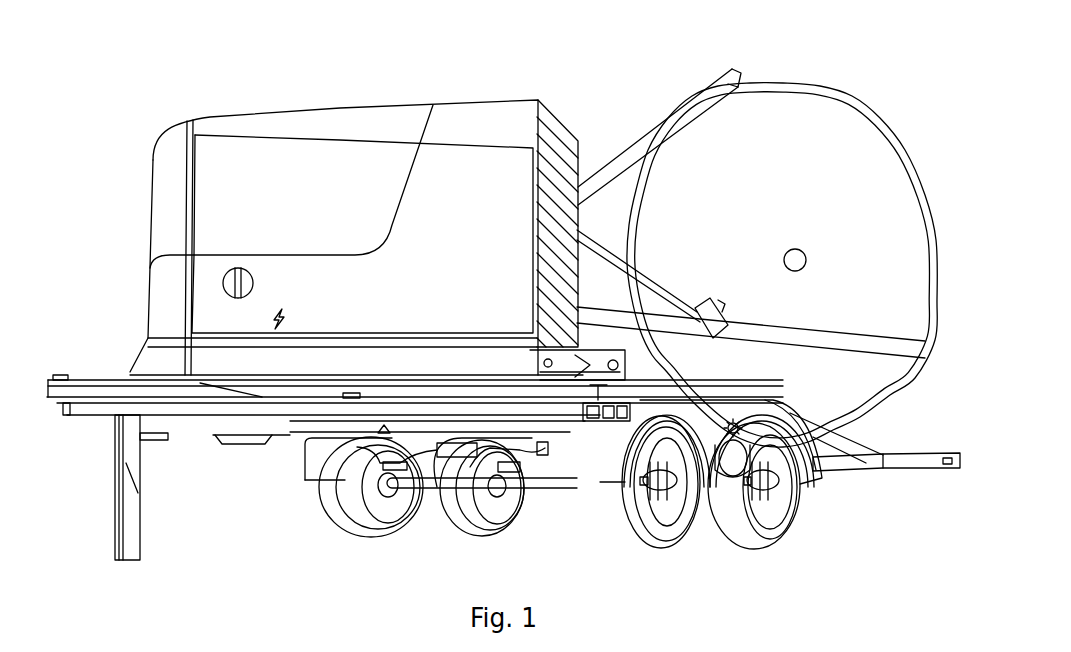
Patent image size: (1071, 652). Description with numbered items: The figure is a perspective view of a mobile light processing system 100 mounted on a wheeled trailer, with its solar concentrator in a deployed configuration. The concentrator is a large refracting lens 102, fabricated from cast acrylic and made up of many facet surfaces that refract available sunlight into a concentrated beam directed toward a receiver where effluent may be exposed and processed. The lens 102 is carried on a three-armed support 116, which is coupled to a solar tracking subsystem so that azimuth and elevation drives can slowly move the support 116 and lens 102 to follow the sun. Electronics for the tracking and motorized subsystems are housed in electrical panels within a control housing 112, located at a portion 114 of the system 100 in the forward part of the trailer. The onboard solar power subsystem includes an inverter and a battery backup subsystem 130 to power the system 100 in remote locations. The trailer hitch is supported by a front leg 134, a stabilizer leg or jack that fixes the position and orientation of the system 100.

The system 100 is at (100, 72).
The refracting lens 102 is at (817, 188).
The control housing 112 is at (473, 118).
The portion 114 is at (110, 205).
The three-armed support 116 is at (650, 135).
The battery backup subsystem 130 is at (575, 422).
The front leg 134 is at (128, 457).